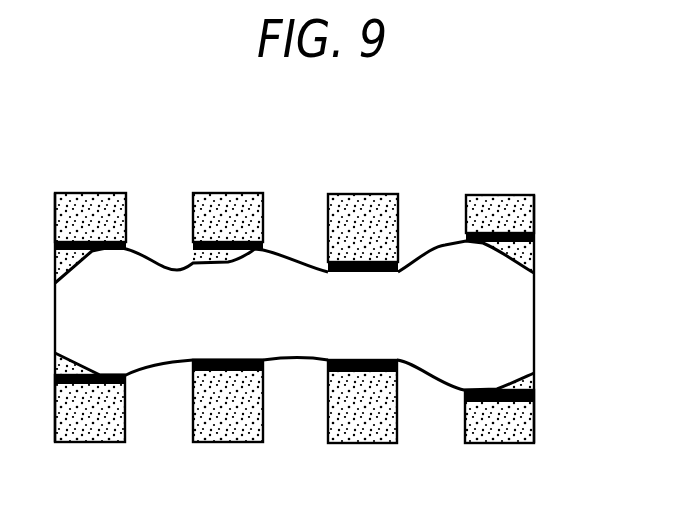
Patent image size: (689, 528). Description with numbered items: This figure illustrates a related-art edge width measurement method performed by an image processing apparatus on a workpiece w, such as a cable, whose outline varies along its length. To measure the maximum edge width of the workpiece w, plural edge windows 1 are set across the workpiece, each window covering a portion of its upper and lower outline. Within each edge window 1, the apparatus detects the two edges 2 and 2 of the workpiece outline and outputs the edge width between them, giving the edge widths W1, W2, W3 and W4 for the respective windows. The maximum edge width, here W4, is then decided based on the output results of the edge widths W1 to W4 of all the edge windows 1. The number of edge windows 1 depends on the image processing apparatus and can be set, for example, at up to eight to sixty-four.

The edge window 1 is at (110, 200).
The edge 2 is at (75, 237).
The workpiece w is at (520, 328).
The edge width W1 is at (91, 262).
The edge width W2 is at (227, 262).
The edge width W3 is at (362, 273).
The maximum edge width W4 is at (500, 245).